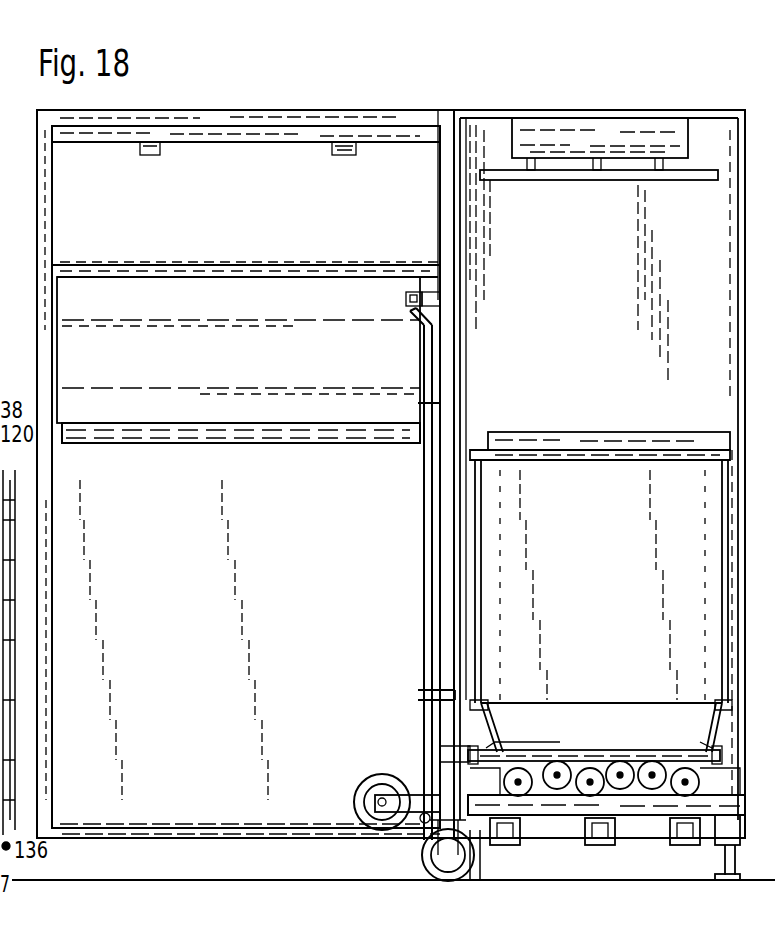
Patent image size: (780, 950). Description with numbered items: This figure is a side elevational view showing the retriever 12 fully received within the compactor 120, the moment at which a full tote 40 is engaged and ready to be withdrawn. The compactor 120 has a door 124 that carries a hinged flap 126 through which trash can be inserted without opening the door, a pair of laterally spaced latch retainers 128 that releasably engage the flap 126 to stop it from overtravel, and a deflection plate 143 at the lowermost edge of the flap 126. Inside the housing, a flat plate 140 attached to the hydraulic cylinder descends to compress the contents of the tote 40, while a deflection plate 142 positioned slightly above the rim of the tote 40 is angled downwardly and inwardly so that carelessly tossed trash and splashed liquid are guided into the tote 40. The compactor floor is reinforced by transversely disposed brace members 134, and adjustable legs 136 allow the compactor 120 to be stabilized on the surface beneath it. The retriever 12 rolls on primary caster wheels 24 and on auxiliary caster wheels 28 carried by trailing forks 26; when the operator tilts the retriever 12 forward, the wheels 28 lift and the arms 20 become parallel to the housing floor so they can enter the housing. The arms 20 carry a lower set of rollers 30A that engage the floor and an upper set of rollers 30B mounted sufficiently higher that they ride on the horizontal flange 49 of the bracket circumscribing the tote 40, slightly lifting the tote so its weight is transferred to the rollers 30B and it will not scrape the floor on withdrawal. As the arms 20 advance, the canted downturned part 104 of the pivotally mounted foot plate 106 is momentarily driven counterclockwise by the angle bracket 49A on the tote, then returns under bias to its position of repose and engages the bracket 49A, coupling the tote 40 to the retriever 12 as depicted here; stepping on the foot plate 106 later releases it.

The door 124 is at (226, 110).
The compactor 120 is at (580, 100).
The latch retainers 128 is at (332, 153).
The hinged flap 126 is at (188, 296).
The deflection plate 143 is at (275, 432).
The retriever 12 is at (387, 347).
The flat plate 140 is at (648, 180).
The tote 40 is at (584, 486).
The deflection plate 142 is at (730, 436).
The foot plate 106 is at (482, 690).
The horizontal flat flange 49 is at (563, 757).
The downturned part 104 is at (496, 748).
The lower set of rollers 30A is at (518, 796).
The upper set of rollers 30B is at (650, 764).
The angle bracket 49A is at (497, 758).
The fork 26 is at (383, 792).
The auxiliary caster wheel 28 is at (354, 794).
The primary caster wheel 24 is at (420, 853).
The arms 20 is at (710, 782).
The brace members 134 is at (672, 840).
The adjustable legs 136 is at (722, 868).